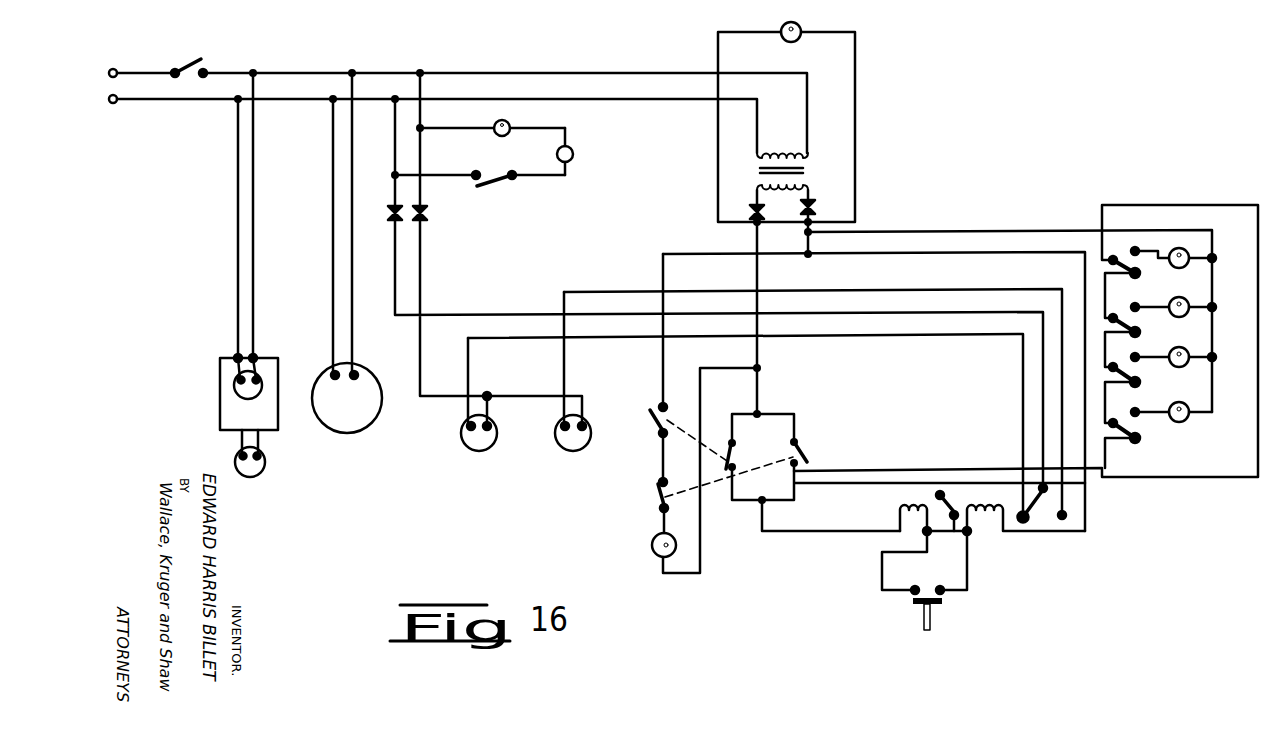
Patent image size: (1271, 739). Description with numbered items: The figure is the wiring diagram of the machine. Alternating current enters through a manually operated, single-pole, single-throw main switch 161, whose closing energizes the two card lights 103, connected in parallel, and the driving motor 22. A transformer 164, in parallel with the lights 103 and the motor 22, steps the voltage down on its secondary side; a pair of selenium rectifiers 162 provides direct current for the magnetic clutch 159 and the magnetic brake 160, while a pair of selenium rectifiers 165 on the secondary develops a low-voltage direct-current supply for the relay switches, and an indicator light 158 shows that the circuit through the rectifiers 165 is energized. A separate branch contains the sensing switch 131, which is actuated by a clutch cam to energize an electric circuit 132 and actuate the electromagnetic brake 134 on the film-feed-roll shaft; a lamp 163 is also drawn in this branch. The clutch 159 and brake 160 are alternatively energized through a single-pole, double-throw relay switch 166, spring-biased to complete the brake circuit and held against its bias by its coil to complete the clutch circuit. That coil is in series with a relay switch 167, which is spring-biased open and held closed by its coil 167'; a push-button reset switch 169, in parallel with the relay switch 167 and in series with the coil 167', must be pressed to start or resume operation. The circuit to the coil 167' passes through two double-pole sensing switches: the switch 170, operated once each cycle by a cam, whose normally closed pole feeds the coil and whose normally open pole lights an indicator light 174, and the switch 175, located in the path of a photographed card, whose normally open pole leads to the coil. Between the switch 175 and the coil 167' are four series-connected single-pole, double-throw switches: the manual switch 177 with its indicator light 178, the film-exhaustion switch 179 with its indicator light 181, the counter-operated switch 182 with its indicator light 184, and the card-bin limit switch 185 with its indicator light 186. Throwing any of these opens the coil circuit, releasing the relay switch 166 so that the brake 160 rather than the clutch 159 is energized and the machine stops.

The driving motor 22 is at (387, 390).
The card lights 103 is at (234, 386).
The sensing switch 131 is at (488, 168).
The electric circuit 132 is at (446, 131).
The electromagnetic brake 134 is at (572, 160).
The indicator light 158 is at (786, 112).
The magnetic clutch 159 is at (462, 450).
The magnetic brake 160 is at (556, 445).
The main switch 161 is at (178, 47).
The selenium rectifiers 162 is at (384, 220).
The lamp 163 is at (494, 125).
The transformer 164 is at (777, 150).
The selenium rectifiers 165 is at (750, 231).
The relay switch 166 is at (994, 502).
The relay switch 167 is at (945, 533).
The relay coil 167' is at (888, 518).
The reset switch 169 is at (946, 596).
The sensing switch 170 is at (708, 443).
The indicator light 174 is at (654, 556).
The sensing switch 175 is at (714, 492).
The manually controlled switch 177 is at (1162, 269).
The indicator light 178 is at (1188, 252).
The sensing switch 179 is at (1162, 319).
The indicator light 181 is at (1188, 302).
The sensing switch 182 is at (1162, 374).
The indicator light 184 is at (1188, 352).
The limit switch 185 is at (1142, 431).
The indicator light 186 is at (1180, 424).